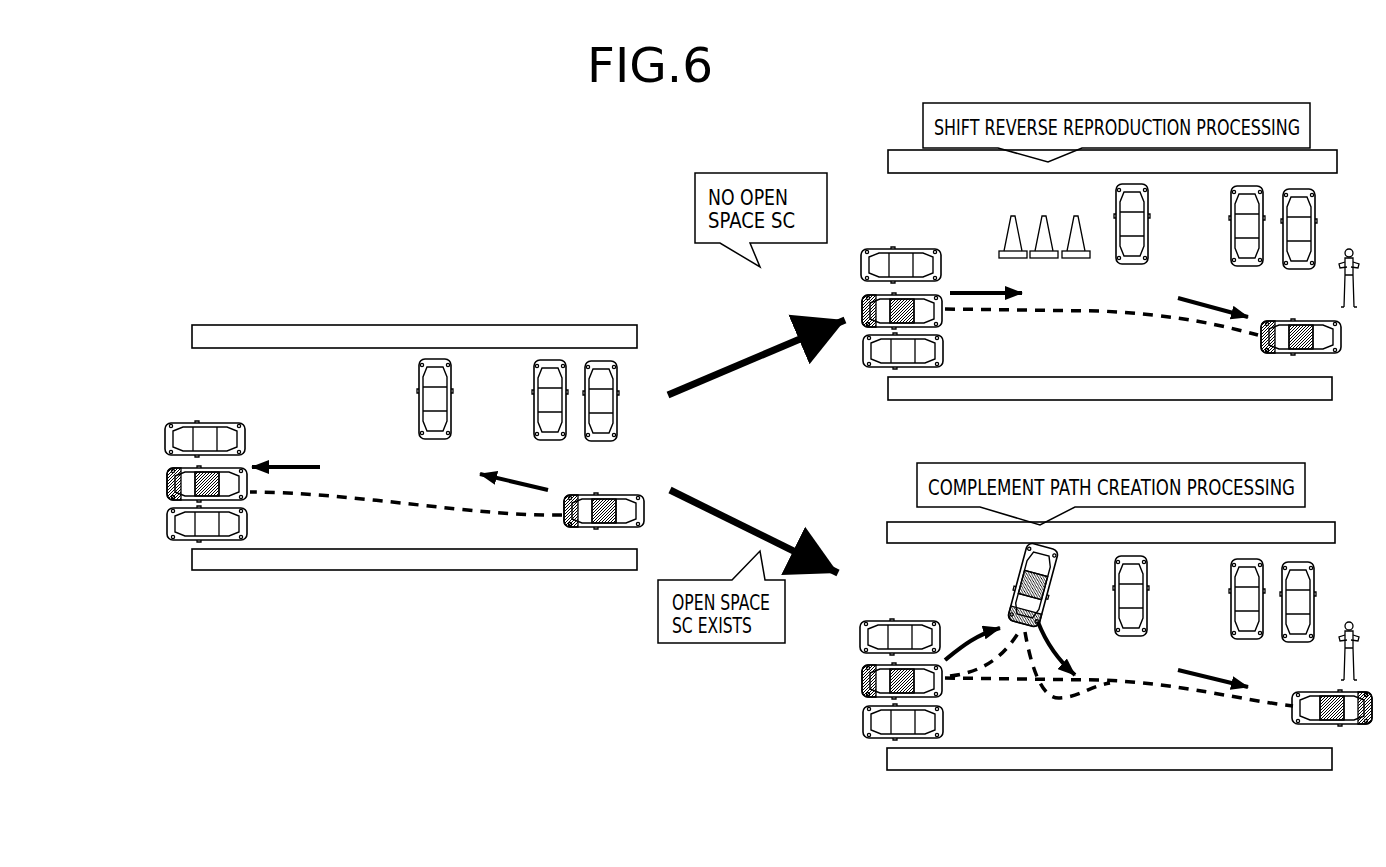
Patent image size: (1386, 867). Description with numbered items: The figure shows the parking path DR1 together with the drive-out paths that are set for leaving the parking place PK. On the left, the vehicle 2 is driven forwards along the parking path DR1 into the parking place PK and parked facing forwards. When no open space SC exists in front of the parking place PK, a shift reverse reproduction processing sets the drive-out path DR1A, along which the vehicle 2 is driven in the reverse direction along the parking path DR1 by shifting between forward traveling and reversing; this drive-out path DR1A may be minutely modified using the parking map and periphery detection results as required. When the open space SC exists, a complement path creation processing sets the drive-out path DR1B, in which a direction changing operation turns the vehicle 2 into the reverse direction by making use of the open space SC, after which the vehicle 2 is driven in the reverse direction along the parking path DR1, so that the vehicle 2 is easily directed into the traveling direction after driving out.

The vehicle 2 is at (240, 497).
The parking place PK is at (150, 483).
The open space SC is at (1009, 601).
The parking path DR1 is at (406, 396).
The drive-out path DR1A is at (1101, 203).
The drive-out path DR1B is at (1119, 568).